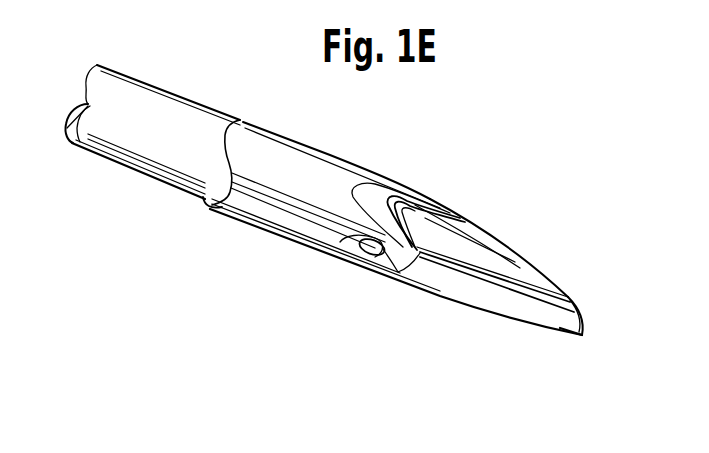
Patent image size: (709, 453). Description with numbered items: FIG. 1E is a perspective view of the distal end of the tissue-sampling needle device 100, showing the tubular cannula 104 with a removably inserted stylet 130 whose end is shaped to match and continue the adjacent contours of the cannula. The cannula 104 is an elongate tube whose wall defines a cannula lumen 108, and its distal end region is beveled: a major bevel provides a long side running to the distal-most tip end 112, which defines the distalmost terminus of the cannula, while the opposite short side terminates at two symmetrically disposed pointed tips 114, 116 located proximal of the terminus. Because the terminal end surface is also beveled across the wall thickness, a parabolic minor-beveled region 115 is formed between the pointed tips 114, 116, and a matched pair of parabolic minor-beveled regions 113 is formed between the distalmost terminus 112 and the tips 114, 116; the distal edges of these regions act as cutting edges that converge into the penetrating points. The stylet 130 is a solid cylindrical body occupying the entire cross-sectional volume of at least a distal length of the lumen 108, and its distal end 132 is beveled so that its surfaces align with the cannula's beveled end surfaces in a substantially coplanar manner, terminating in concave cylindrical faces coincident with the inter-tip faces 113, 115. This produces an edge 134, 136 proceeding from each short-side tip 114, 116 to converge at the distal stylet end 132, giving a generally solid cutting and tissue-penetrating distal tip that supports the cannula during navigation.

The tissue-sampling needle device 100 is at (552, 218).
The tubular cannula 104 is at (306, 167).
The cannula lumen 108 is at (372, 257).
The distal-most tip end 112 is at (560, 338).
The parabolic minor-beveled regions 113 is at (338, 250).
The beveled distal terminal pointed tip 114 is at (453, 210).
The parabolic minor-beveled region 115 is at (383, 193).
The beveled distal terminal pointed tip 116 is at (400, 283).
The stylet 130 is at (567, 297).
The distal end of the stylet 132 is at (582, 313).
The edge 134 is at (513, 250).
The edge 136 is at (493, 262).